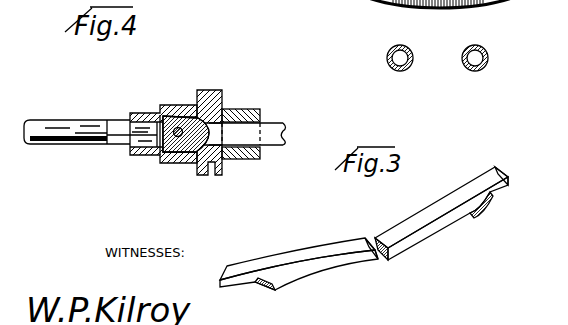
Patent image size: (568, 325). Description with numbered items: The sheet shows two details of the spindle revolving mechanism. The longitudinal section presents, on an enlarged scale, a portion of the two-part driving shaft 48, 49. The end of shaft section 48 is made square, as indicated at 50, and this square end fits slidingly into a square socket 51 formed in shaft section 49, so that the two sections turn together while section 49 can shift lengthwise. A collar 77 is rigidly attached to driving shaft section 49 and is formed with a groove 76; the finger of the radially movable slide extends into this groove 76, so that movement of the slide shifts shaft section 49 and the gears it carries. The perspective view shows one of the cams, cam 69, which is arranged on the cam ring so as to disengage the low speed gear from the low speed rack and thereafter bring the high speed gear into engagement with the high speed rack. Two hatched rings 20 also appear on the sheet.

In FIG. 4, the rings 20 is at (463, 68).
In FIG. 4, the driving shaft section 48 is at (62, 132).
In FIG. 4, the driving shaft section 49 is at (268, 130).
In FIG. 4, the square end 50 is at (122, 137).
In FIG. 4, the square socket 51 is at (158, 150).
In FIG. 3, the cam 69 is at (437, 220).
In FIG. 4, the groove 76 is at (210, 93).
In FIG. 4, the collar 77 is at (183, 105).